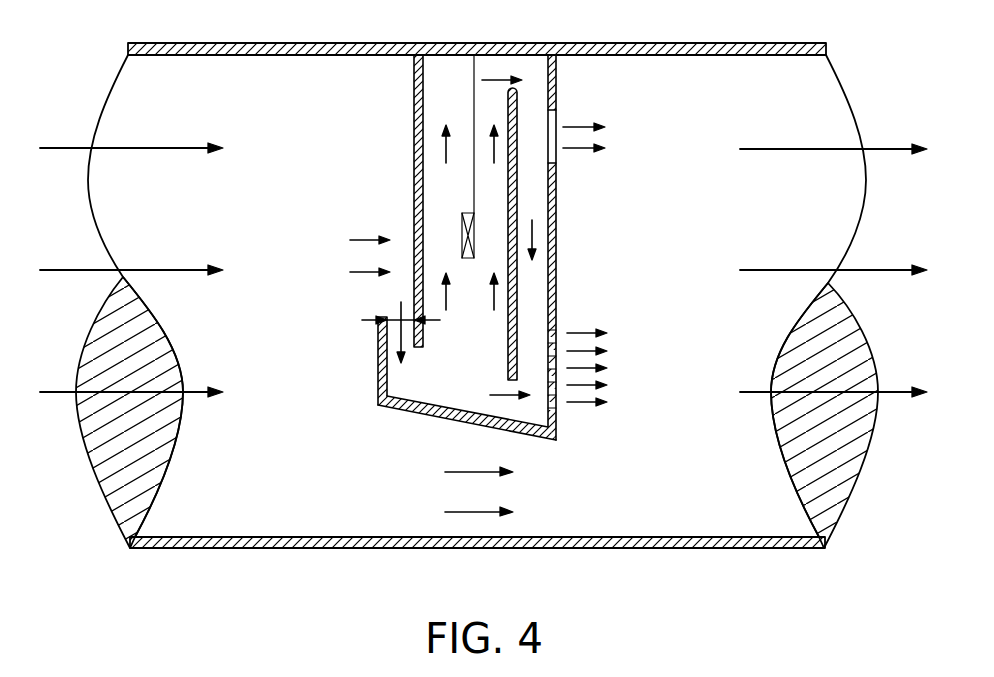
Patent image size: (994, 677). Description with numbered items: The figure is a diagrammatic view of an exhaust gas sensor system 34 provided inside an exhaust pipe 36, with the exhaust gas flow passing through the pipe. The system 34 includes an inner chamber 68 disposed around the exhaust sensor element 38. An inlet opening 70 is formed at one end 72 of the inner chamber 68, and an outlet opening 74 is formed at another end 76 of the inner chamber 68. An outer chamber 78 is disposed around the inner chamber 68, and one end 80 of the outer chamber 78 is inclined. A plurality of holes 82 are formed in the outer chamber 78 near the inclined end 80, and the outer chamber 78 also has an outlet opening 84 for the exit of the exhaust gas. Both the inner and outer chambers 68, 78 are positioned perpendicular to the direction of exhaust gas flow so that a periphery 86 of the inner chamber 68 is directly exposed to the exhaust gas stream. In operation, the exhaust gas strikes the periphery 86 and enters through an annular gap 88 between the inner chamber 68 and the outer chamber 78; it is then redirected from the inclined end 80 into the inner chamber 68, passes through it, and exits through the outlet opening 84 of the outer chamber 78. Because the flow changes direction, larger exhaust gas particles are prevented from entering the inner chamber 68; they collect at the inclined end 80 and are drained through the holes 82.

The exhaust gas sensor system 34 is at (411, 108).
The exhaust pipe 36 is at (728, 550).
The exhaust sensor element 38 is at (462, 223).
The inner chamber 68 is at (414, 158).
The inlet opening 70 is at (457, 350).
The end of the inner chamber 72 is at (508, 378).
The outlet opening 74 is at (440, 82).
The another end of the inner chamber 76 is at (518, 97).
The outer chamber 78 is at (557, 90).
The inclined end of the outer chamber 80 is at (393, 408).
The holes 82 is at (557, 345).
The outlet opening of the outer chamber 84 is at (557, 157).
The periphery of the inner chamber 86 is at (415, 315).
The annular gap 88 is at (362, 320).